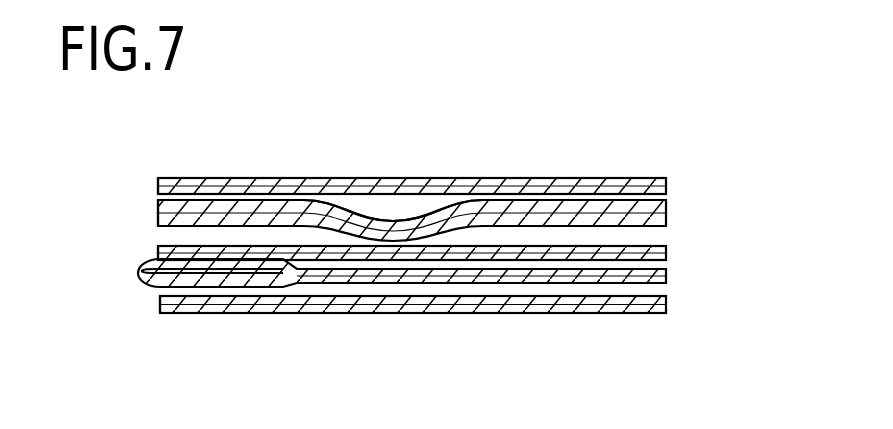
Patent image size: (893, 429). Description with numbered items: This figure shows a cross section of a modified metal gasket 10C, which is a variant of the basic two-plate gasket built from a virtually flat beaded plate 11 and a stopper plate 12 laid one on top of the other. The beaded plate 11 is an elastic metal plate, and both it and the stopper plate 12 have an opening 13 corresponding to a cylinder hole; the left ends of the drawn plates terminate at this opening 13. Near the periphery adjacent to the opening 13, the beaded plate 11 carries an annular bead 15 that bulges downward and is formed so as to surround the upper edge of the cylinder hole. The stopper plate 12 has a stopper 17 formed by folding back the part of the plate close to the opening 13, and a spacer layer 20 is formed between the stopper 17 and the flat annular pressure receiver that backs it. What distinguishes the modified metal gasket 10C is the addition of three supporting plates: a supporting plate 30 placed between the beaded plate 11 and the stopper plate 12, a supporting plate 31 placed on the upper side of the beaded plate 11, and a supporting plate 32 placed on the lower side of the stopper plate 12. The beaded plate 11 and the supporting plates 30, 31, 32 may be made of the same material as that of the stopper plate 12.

The modified metal gasket 10C is at (628, 175).
The beaded plate 11 is at (465, 172).
The stopper plate 12 is at (427, 297).
The opening 13 is at (158, 212).
The annular bead 15 is at (386, 232).
The stopper 17 is at (192, 266).
The spacer layer 20 is at (213, 274).
The supporting plate 30 is at (668, 260).
The supporting plate 31 is at (668, 192).
The supporting plate 32 is at (668, 304).